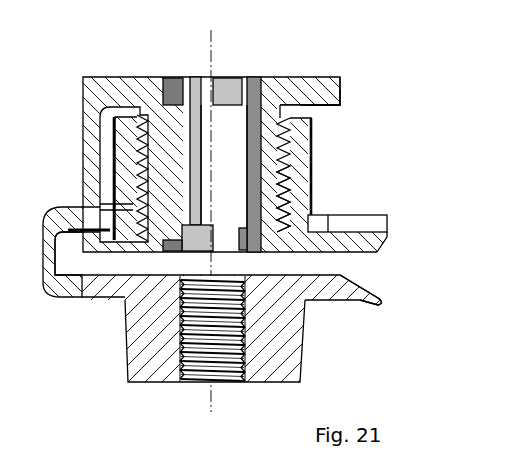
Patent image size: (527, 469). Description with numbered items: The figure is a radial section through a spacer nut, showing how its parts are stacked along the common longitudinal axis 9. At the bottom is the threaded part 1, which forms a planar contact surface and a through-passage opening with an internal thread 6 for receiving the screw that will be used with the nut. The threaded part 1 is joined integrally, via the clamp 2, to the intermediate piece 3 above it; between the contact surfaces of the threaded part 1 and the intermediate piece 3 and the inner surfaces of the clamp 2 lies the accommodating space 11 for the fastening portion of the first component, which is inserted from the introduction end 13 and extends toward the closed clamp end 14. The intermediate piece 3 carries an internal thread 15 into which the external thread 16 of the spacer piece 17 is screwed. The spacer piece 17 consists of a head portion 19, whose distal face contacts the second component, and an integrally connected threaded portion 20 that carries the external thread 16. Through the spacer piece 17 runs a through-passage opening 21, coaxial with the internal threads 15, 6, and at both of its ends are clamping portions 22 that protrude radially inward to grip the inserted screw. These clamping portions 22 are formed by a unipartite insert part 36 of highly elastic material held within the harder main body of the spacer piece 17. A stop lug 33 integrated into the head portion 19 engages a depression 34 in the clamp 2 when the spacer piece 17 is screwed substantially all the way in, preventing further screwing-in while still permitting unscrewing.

The threaded part 1 is at (290, 341).
The clamp 2 is at (50, 248).
The intermediate piece 3 is at (305, 168).
The internal thread 6 is at (197, 350).
The longitudinal axis 9 is at (210, 414).
The accommodating space 11 is at (336, 263).
The introduction end 13 is at (390, 280).
The closed clamp end 14 is at (63, 266).
The internal thread 15 is at (287, 199).
The external thread 16 is at (338, 199).
The spacer piece 17 is at (344, 81).
The head portion 19 is at (344, 94).
The threaded portion 20 is at (289, 131).
The through-passage opening 21 is at (213, 186).
The clamping portions 22 is at (187, 78).
The stop lug 33 is at (97, 156).
The depression 34 is at (100, 222).
The insert part 36 is at (259, 76).